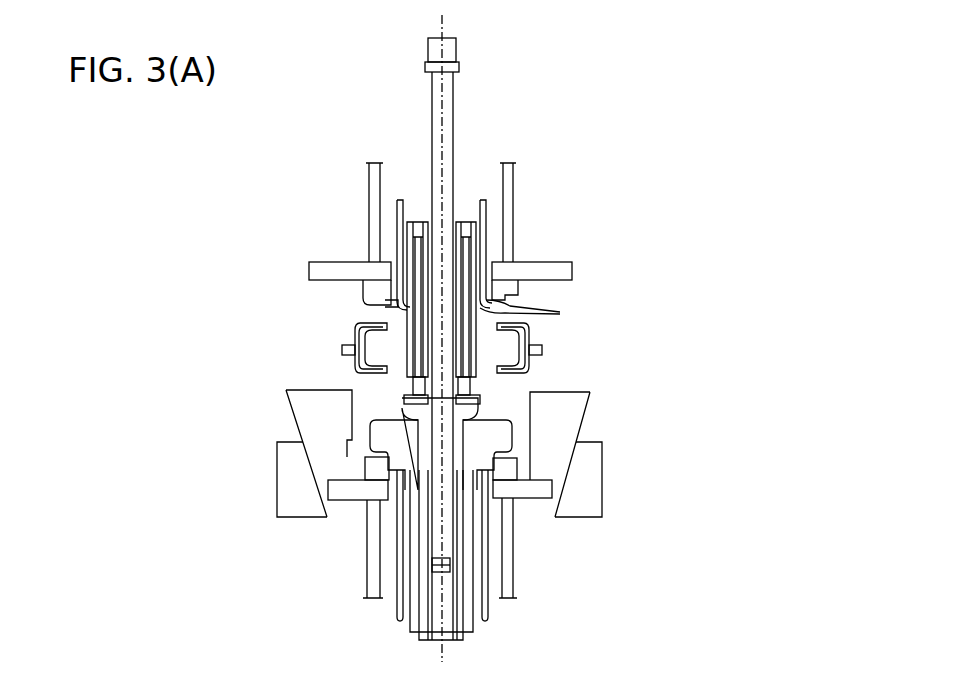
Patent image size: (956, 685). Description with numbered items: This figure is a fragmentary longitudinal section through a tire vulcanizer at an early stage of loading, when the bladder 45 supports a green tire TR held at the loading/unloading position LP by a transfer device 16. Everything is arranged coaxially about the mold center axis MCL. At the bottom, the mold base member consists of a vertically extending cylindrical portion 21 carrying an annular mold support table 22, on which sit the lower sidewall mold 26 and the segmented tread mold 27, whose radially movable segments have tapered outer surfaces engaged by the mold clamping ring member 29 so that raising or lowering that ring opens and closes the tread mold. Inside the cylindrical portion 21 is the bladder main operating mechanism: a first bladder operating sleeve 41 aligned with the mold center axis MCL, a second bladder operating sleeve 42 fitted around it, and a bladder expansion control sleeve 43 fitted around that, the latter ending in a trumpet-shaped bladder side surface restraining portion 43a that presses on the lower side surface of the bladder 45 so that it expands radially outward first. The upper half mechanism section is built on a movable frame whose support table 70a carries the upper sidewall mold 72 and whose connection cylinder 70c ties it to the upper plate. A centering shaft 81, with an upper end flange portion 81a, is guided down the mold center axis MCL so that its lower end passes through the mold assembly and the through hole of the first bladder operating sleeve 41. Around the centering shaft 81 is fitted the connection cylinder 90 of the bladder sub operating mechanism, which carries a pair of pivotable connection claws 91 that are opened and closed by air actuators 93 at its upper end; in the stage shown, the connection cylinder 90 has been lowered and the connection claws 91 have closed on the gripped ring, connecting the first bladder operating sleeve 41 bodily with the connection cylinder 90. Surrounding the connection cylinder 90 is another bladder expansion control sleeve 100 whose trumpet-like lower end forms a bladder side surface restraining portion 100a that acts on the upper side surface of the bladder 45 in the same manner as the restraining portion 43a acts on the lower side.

The mold center axis MCL is at (443, 33).
The upper end flange portion 81a is at (432, 68).
The centering shaft 81 is at (445, 118).
The connection cylinder 90 is at (410, 256).
The air actuators 93 is at (463, 228).
The bladder expansion control sleeve 100 is at (485, 230).
The bladder side surface restraining portion 100a is at (540, 313).
The connection cylinder 70c is at (506, 205).
The upper sidewall mold 72 is at (368, 290).
The support table 70a is at (542, 272).
The transfer device 16 is at (357, 330).
The loading/unloading position LP is at (318, 348).
The green tire TR is at (540, 350).
The bladder 45 is at (510, 432).
The connection claws 91 is at (460, 402).
The mold support table 22 is at (340, 490).
The lower sidewall mold 26 is at (373, 470).
The segmented tread mold 27 is at (563, 428).
The mold clamping ring member 29 is at (588, 482).
The bladder side surface restraining portion 43a is at (487, 458).
The cylindrical portion 21 is at (373, 553).
The second bladder operating sleeve 42 is at (468, 572).
The first bladder operating sleeve 41 is at (428, 592).
The bladder expansion control sleeve 43 is at (480, 538).